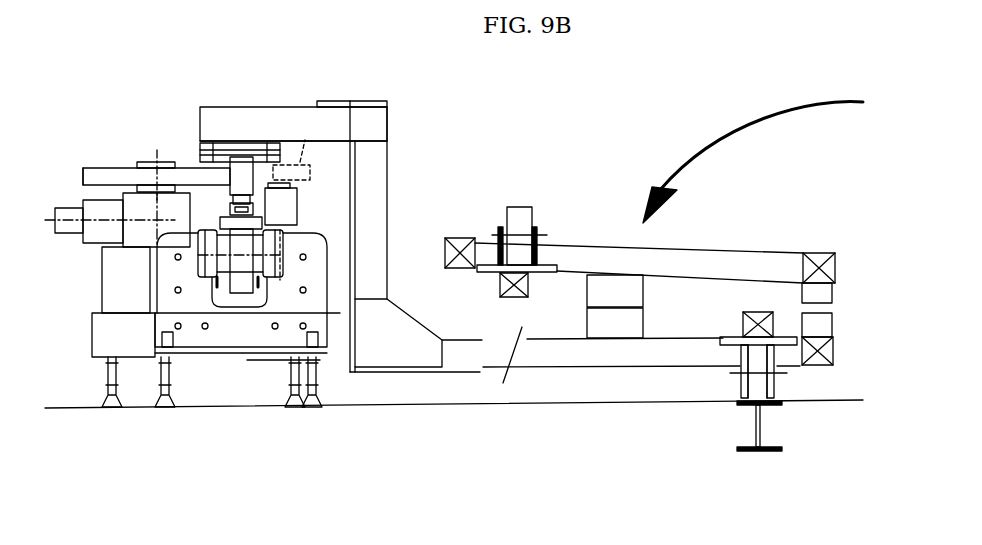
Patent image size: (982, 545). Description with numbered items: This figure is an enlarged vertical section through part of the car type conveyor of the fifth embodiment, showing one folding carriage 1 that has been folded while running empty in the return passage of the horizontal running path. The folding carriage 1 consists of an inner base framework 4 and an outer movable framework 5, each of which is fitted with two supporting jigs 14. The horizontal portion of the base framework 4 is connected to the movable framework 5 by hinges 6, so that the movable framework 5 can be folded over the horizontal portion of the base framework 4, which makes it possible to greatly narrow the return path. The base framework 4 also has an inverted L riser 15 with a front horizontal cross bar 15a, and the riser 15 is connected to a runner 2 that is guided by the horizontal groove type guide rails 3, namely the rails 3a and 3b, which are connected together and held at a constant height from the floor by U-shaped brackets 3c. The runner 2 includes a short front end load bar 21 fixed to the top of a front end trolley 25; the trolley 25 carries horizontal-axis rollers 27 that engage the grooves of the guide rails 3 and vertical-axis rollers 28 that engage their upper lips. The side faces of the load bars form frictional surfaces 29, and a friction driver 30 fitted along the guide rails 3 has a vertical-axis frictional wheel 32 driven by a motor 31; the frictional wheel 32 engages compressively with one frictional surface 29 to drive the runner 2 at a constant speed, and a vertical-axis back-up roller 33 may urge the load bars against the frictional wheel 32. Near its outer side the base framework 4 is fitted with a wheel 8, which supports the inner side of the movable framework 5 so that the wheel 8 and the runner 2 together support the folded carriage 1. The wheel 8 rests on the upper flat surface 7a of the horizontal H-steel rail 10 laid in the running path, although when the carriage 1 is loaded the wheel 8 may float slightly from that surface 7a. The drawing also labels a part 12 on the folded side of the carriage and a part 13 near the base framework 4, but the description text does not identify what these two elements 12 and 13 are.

The folding carriage 1 is at (612, 243).
The runner 2 is at (262, 205).
The guide rails 3 is at (299, 247).
The guide rail 3a is at (187, 263).
The guide rail 3b is at (300, 251).
The U-shaped brackets 3c is at (192, 299).
The inner base framework 4 is at (598, 368).
The outer movable framework 5 is at (720, 250).
The hinges 6 is at (828, 310).
The upper surface 7a is at (757, 385).
The wheel 8 is at (763, 383).
The H-steel rail 10 is at (748, 452).
The roller 12 is at (758, 313).
The roller unit 13 is at (506, 297).
The supporting jigs 14 is at (627, 323).
The inverted L riser 15 is at (388, 118).
The front horizontal cross bar 15a is at (270, 123).
The front end load bar 21 is at (238, 155).
The front end trolley 25 is at (242, 262).
The horizontal-axis rollers 27 is at (270, 258).
The vertical-axis roller 28 is at (227, 218).
The frictional surfaces 29 is at (222, 155).
The friction drivers 30 is at (103, 164).
The motor 31 is at (97, 232).
The frictional wheel 32 is at (88, 172).
The back-up roller 33 is at (333, 103).